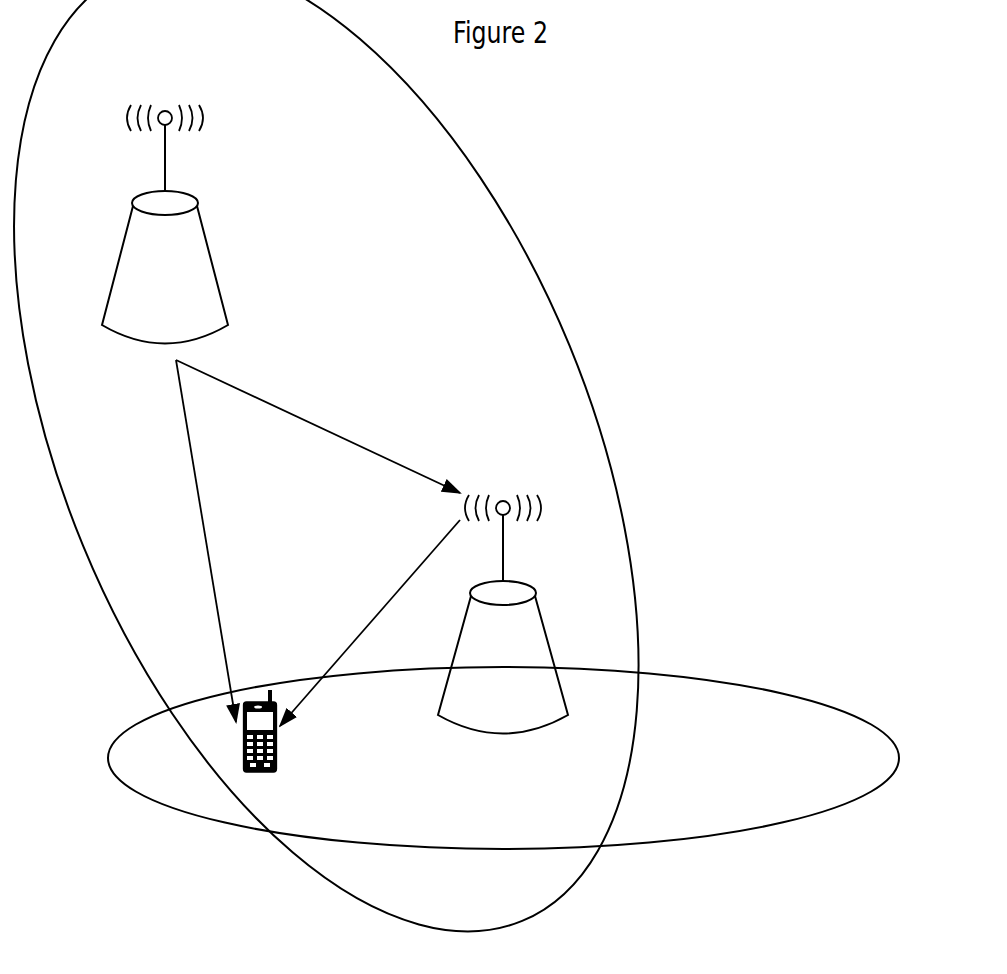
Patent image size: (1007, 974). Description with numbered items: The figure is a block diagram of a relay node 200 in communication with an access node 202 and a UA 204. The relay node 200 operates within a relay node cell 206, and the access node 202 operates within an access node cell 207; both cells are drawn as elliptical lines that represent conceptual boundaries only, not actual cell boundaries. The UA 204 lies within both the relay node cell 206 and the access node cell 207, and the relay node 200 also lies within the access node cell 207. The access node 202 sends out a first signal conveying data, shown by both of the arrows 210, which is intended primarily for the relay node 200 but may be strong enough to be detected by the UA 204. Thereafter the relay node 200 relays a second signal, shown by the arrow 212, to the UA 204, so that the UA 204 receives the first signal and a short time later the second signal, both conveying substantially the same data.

The relay node 200 is at (501, 581).
The access node 202 is at (164, 192).
The UA 204 is at (278, 767).
The relay node cell 206 is at (504, 851).
The access node cell 207 is at (559, 322).
The arrows 210 is at (250, 393).
The arrow 212 is at (368, 624).